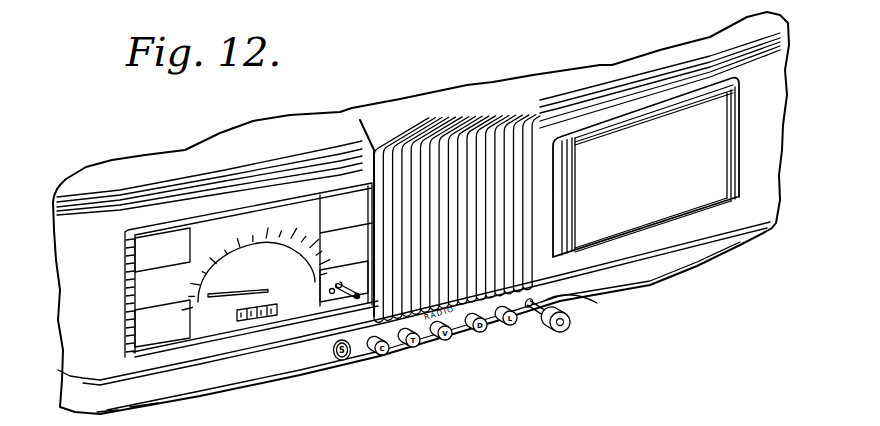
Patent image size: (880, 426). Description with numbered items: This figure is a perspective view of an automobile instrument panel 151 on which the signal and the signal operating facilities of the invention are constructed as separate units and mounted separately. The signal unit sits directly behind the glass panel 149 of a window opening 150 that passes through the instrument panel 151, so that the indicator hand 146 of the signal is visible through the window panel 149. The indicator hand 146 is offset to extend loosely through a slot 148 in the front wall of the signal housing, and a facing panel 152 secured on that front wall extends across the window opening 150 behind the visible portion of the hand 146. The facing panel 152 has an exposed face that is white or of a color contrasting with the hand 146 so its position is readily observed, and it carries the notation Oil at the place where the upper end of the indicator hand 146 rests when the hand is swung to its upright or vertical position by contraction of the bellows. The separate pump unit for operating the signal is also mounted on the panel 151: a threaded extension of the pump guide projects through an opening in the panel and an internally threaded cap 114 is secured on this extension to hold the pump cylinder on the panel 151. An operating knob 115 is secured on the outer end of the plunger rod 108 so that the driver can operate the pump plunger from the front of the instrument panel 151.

The plunger rod 108 is at (597, 303).
The internally threaded cap 114 is at (529, 308).
The operating knob 115 is at (566, 330).
The indicator hand 146 is at (338, 292).
The slot 148 is at (352, 279).
The glass panel 149 is at (321, 267).
The window opening 150 is at (329, 292).
The automobile instrument panel 151 is at (323, 371).
The facing panel 152 is at (345, 299).